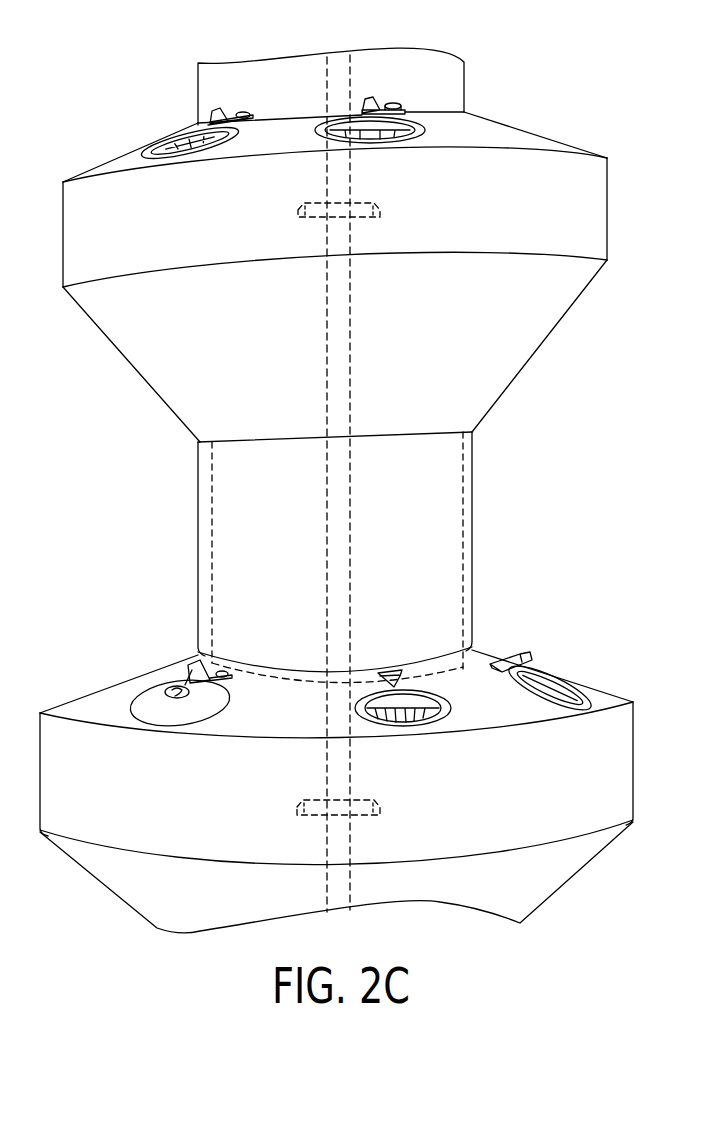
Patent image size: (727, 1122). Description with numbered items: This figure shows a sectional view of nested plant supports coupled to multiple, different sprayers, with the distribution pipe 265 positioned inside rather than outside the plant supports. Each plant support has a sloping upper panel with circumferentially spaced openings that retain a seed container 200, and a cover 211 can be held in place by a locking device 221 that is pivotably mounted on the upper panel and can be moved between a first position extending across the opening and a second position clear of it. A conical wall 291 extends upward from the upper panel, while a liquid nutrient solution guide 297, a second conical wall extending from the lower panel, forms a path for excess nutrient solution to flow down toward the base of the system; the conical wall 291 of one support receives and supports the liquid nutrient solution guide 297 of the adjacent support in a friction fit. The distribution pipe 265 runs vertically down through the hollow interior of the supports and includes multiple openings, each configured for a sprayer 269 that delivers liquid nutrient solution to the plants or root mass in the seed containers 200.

The seed container 200 is at (403, 133).
The cover 211 is at (155, 718).
The locking device 221 is at (212, 110).
The distribution pipe 265 is at (352, 358).
The sprayer 269 is at (298, 208).
The conical wall 291 is at (465, 558).
The liquid nutrient solution guide 297 is at (287, 453).